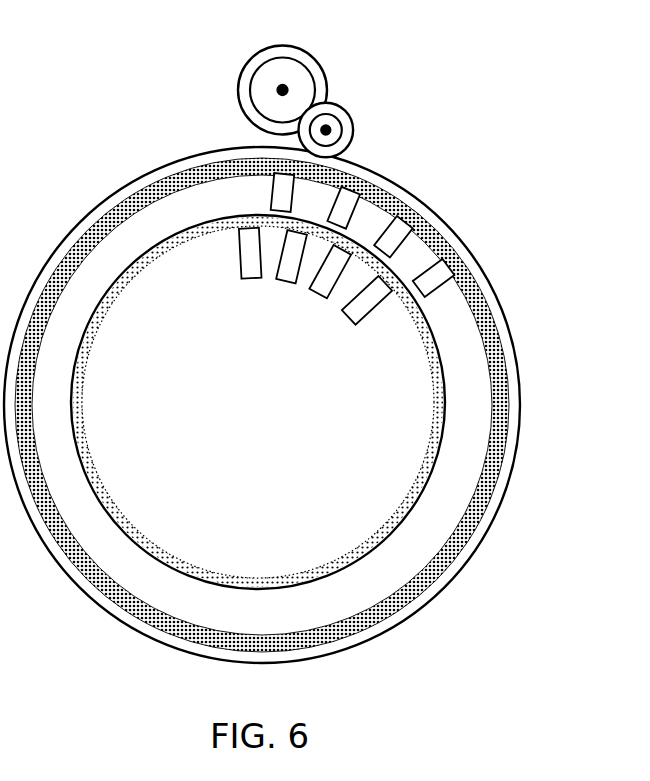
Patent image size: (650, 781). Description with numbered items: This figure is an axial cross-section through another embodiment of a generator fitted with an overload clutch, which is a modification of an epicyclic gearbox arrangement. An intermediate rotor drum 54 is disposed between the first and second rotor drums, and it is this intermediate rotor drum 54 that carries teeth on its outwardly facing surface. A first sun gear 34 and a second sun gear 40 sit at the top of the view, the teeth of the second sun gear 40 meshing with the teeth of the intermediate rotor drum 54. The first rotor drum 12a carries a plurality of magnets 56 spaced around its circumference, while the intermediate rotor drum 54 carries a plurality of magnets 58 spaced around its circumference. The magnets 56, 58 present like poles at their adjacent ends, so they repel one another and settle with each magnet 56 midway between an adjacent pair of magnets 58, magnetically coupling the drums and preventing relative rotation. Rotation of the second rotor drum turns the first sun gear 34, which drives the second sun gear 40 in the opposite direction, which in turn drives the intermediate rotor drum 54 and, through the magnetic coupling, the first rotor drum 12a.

The intermediate rotor drum 54 is at (502, 372).
The first rotor drum 12a is at (433, 400).
The magnets 58 is at (280, 190).
The magnets 56 is at (242, 262).
The first sun gear 34 is at (293, 72).
The second sun gear 40 is at (333, 125).